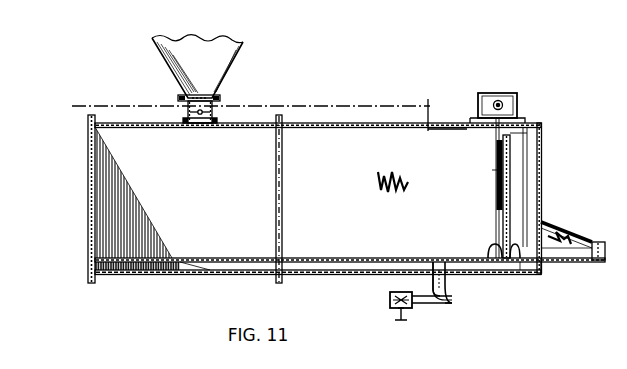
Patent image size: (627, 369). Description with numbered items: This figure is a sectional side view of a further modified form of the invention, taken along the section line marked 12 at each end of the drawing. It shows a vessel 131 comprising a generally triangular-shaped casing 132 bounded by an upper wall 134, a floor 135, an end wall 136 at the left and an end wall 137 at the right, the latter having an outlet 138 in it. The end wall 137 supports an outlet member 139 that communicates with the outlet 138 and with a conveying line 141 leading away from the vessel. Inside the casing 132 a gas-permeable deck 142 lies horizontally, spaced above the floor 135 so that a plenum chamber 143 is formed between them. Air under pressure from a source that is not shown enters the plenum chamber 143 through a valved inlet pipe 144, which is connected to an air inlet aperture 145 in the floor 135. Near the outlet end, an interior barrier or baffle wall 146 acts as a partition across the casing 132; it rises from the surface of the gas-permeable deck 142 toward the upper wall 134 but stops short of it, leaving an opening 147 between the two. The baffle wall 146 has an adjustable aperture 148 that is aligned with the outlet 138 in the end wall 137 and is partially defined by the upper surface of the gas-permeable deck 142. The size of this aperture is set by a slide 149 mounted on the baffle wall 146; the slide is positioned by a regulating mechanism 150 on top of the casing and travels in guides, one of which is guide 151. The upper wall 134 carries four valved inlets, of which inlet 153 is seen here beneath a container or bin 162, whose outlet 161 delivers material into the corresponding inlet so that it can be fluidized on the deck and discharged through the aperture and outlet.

The figure 12 section reference 12 is at (72, 100).
The vessel 131 is at (145, 130).
The casing 132 is at (86, 167).
The upper wall 134 is at (108, 122).
The floor 135 is at (208, 276).
The end wall 136 is at (88, 223).
The end wall 137 is at (542, 164).
The outlet 138 is at (541, 263).
The outlet member 139 is at (572, 236).
The conveying line 141 is at (600, 263).
The gas-permeable deck 142 is at (314, 263).
The plenum chamber 143 is at (251, 268).
The valved inlet pipe 144 is at (440, 304).
The air inlet aperture 145 is at (441, 258).
The baffle wall 146 is at (508, 151).
The opening 147 is at (521, 130).
The adjustable aperture 148 is at (511, 270).
The slide 149 is at (508, 215).
The regulating mechanism 150 is at (497, 93).
The guide 151 is at (488, 270).
The inlet 153 is at (198, 127).
The outlet 161 is at (206, 94).
The container 162 is at (245, 56).